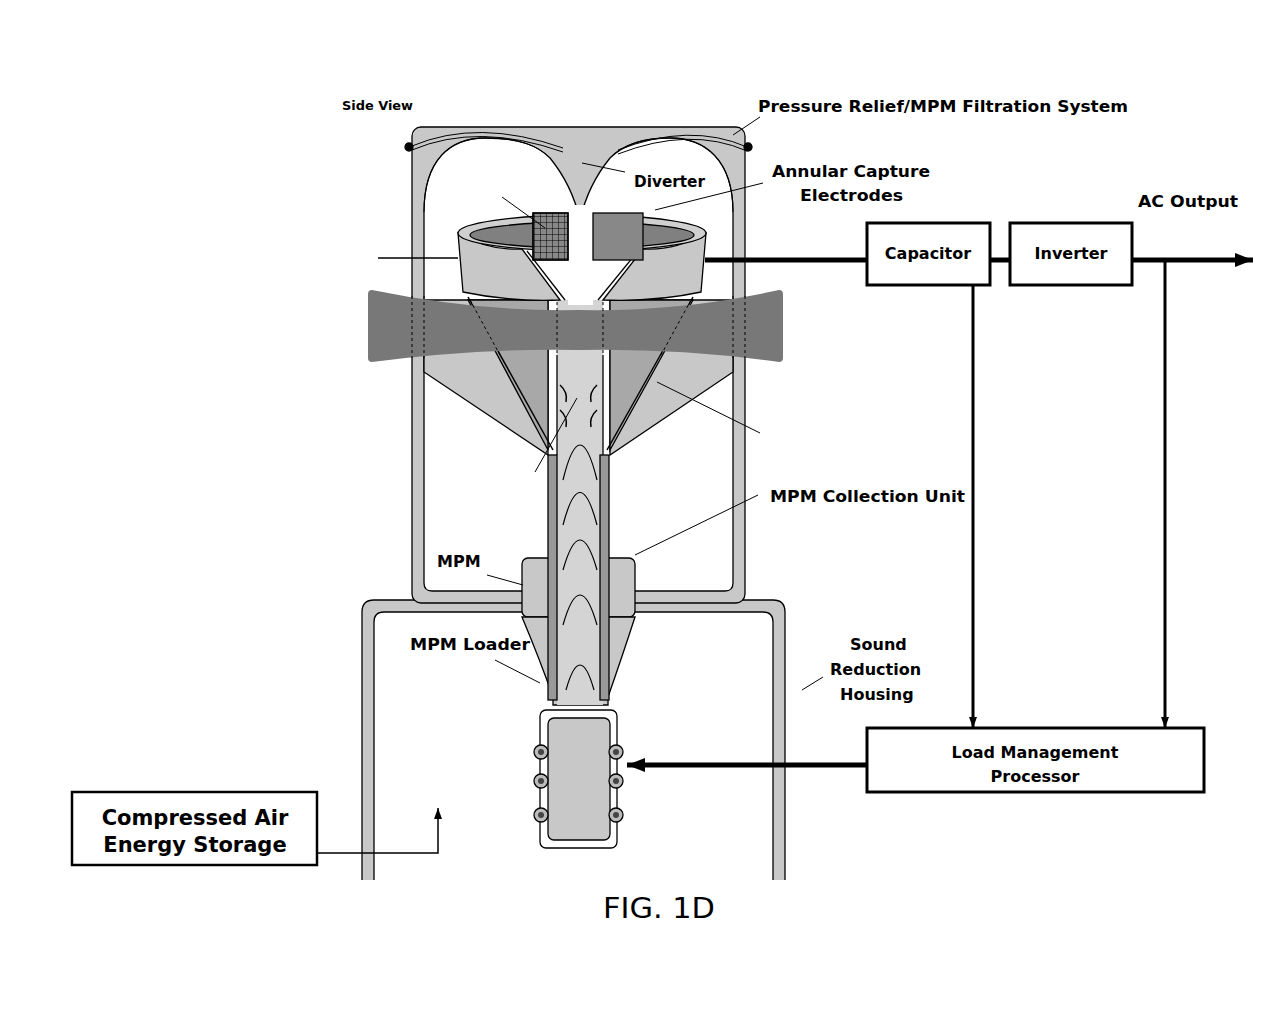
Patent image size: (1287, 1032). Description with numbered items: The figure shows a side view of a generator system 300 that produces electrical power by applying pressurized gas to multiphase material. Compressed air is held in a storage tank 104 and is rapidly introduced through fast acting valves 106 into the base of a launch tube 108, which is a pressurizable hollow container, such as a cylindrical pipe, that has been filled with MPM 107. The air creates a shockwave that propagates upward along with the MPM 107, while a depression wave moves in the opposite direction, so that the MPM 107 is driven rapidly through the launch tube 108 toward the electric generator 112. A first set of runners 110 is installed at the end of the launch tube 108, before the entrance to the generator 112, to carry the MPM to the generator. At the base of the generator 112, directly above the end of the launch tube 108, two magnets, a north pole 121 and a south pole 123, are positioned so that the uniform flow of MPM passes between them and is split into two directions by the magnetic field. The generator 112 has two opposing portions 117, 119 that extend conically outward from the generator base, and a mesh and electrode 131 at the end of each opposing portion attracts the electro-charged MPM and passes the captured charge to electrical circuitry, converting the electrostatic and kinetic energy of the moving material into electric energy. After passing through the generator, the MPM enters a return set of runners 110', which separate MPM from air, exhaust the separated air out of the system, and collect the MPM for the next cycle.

The generator system 300 is at (368, 95).
The return set of runners 110' is at (578, 138).
The mesh and electrode 131 is at (507, 226).
The electric generator 112 is at (450, 243).
The opposing portion 117 is at (458, 273).
The opposing portion 119 is at (708, 242).
The north pole magnet 121 is at (410, 363).
The south pole magnet 123 is at (792, 362).
The launch tube 108 is at (603, 503).
The first set of runners 110 is at (634, 537).
The multiphase material (MPM) 107 is at (587, 740).
The fast acting valves 106 is at (535, 760).
The storage tank 104 is at (411, 779).